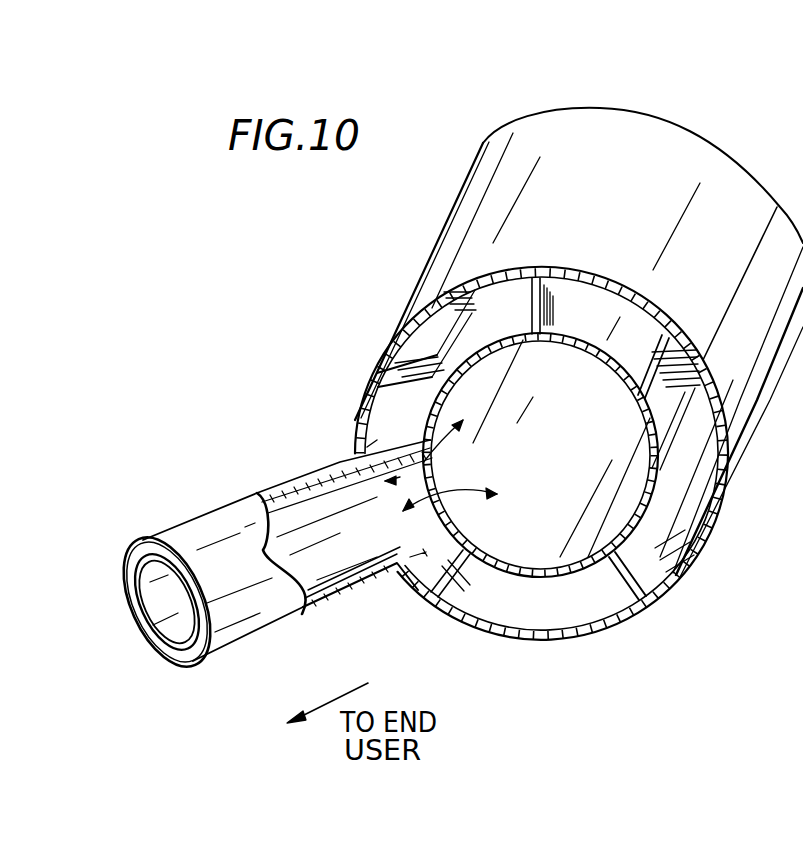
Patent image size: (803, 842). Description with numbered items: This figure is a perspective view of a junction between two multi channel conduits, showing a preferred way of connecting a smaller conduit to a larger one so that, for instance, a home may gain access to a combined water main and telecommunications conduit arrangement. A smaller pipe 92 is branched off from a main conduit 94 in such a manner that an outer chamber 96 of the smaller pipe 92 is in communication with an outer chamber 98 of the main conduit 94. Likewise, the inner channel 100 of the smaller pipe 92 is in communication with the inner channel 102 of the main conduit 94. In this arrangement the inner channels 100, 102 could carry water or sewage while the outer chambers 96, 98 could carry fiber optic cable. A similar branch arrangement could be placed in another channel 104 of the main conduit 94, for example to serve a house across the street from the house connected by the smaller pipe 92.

The smaller pipe 92 is at (198, 512).
The main conduit 94 is at (440, 240).
The outer chamber 96 is at (343, 597).
The outer chamber 98 is at (427, 580).
The inner channel 100 is at (285, 553).
The inner channel 102 is at (625, 503).
The channel 104 is at (668, 567).